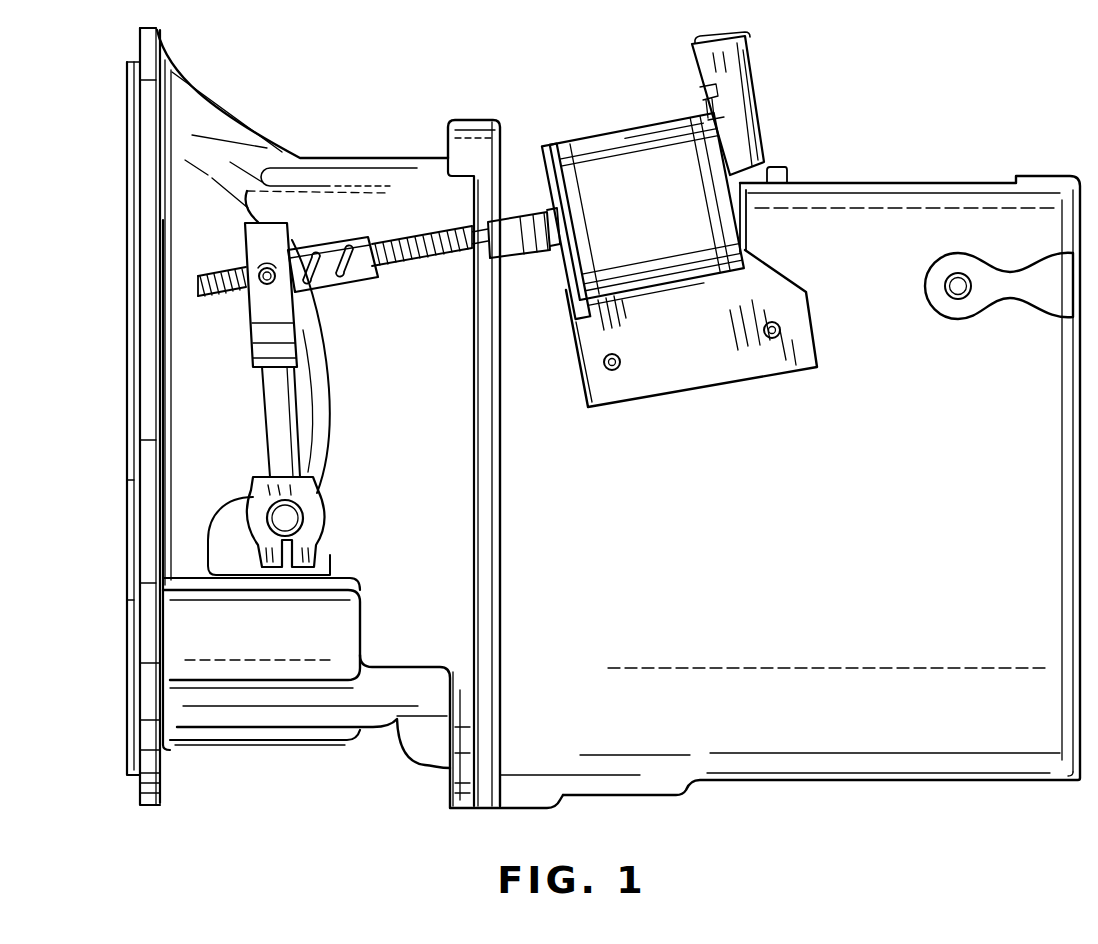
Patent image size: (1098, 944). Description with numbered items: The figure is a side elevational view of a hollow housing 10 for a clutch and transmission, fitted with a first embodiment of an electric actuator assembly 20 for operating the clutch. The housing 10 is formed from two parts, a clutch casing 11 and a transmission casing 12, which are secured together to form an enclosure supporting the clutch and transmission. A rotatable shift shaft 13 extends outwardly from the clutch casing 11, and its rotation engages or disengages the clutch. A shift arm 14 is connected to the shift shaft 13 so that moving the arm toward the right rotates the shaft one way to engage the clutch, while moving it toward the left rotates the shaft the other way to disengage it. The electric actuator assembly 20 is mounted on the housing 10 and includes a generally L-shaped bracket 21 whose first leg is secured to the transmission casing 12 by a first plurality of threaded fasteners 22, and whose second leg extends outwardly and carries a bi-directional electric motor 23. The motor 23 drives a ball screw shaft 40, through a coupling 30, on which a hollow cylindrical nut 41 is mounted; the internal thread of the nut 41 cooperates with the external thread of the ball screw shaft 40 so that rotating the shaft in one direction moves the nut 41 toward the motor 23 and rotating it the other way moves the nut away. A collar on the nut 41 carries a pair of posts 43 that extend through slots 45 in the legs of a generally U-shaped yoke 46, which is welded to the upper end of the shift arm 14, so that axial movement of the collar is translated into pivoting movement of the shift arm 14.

The housing 10 is at (431, 79).
The clutch casing 11 is at (363, 171).
The transmission casing 12 is at (947, 203).
The shift shaft 13 is at (298, 515).
The shift arm 14 is at (273, 405).
The electric actuator assembly 20 is at (792, 92).
The bracket 21 is at (698, 373).
The threaded fasteners 22 is at (614, 372).
The electric motor 23 is at (657, 157).
The coupling 30 is at (520, 256).
The ball screw shaft 40 is at (425, 255).
The nut 41 is at (367, 237).
The posts 43 is at (262, 285).
The slots 45 is at (282, 262).
The yoke 46 is at (253, 242).